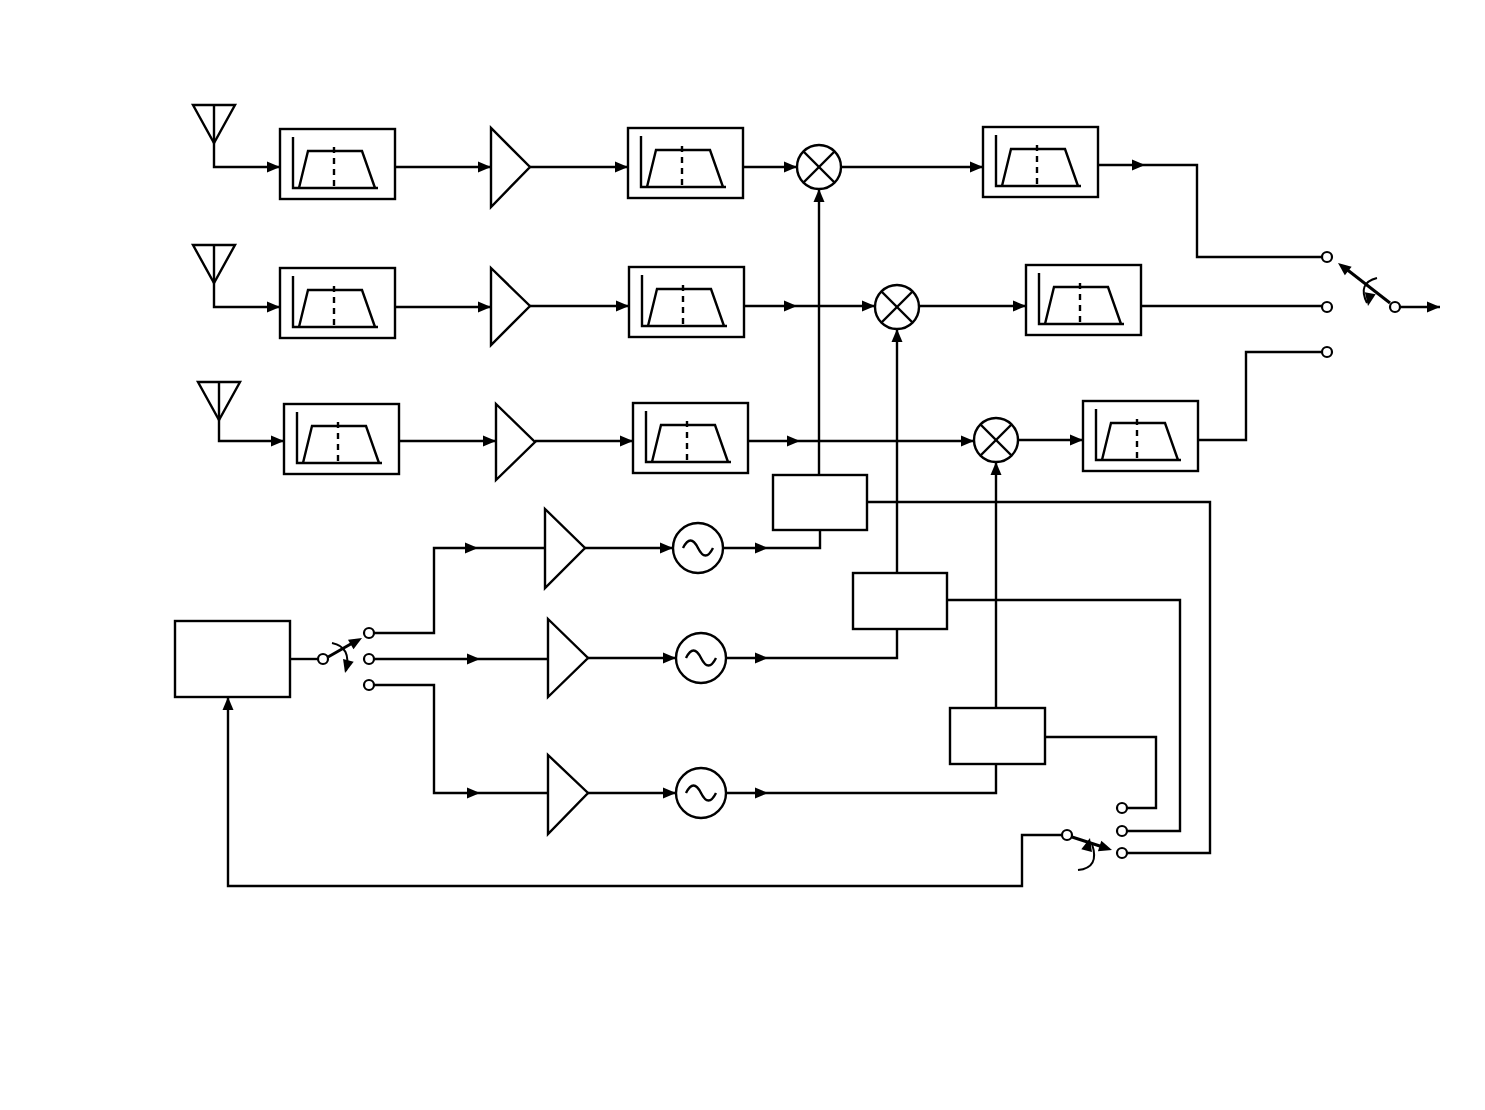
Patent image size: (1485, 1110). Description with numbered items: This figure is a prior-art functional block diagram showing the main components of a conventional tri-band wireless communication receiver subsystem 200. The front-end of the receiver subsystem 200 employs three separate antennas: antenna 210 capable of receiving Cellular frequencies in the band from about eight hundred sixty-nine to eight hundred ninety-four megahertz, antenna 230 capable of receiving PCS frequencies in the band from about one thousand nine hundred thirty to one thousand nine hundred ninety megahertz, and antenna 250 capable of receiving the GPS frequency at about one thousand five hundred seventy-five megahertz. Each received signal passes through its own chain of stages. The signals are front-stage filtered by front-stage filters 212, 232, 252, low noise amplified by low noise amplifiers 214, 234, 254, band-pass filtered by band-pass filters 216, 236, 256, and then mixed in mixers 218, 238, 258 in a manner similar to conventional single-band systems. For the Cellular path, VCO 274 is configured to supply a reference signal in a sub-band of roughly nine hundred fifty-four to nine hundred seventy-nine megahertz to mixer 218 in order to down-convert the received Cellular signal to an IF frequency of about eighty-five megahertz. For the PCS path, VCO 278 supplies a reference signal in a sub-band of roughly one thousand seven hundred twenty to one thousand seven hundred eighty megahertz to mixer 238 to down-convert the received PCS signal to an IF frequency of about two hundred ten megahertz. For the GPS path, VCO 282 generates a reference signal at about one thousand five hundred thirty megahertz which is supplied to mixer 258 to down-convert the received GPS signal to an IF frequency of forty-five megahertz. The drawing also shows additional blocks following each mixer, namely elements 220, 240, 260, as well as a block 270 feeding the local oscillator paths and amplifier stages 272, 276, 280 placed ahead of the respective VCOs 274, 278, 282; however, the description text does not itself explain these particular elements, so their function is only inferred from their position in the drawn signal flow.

The conventional receiver subsystem 200 is at (1340, 840).
The antenna 210 is at (200, 130).
The front-stage filter 212 is at (343, 129).
The low noise amplifier 214 is at (512, 147).
The band-pass filter 216 is at (697, 128).
The mixer 218 is at (820, 145).
The cellular IF band-pass filter 220 is at (1062, 127).
The antenna 230 is at (200, 267).
The front-stage filter 232 is at (343, 268).
The low noise amplifier 234 is at (512, 286).
The band-pass filter 236 is at (694, 267).
The mixer 238 is at (898, 285).
The PCS IF band-pass filter 240 is at (1105, 265).
The antenna 250 is at (204, 404).
The front-stage filter 252 is at (348, 404).
The low noise amplifier 254 is at (516, 422).
The band-pass filter 256 is at (697, 403).
The mixer 258 is at (997, 418).
The GPS IF band-pass filter 260 is at (1162, 401).
The phase locked loop 270 is at (240, 621).
The cellular LO amplifier 272 is at (562, 528).
The VCO 274 is at (696, 523).
The PCS LO amplifier 276 is at (565, 685).
The VCO 278 is at (700, 683).
The GPS LO amplifier 280 is at (565, 820).
The VCO 282 is at (700, 818).